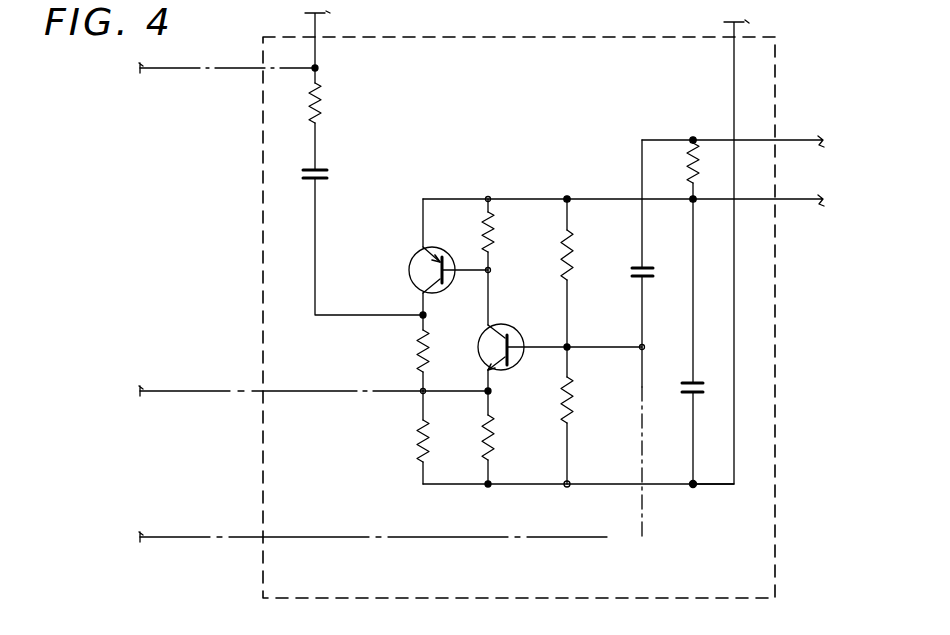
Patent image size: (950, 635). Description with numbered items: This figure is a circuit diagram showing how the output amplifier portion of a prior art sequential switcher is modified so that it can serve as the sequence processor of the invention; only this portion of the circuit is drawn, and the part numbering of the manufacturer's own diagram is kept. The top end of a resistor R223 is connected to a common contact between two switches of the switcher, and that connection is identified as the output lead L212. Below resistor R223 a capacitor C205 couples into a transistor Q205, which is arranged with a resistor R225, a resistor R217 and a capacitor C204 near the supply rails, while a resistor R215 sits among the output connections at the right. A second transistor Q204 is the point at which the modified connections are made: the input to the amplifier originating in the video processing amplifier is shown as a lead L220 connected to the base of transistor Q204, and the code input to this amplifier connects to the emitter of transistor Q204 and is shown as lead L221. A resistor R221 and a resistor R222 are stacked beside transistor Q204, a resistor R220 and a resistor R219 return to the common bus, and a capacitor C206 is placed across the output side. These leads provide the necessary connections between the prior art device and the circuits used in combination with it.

The output lead L212 is at (210, 68).
The resistor R223 is at (322, 101).
The capacitor C205 is at (327, 180).
The transistor Q205 is at (410, 268).
The resistor R225 is at (491, 233).
The resistor R217 is at (565, 274).
The capacitor C204 is at (640, 267).
The transistor Q204 is at (484, 333).
The resistor R221 is at (420, 352).
The lead L221 is at (173, 390).
The resistor R220 is at (486, 422).
The resistor R219 is at (563, 405).
The resistor R222 is at (420, 438).
The capacitor C206 is at (687, 397).
The lead L220 is at (170, 538).
The resistor R215 is at (688, 160).